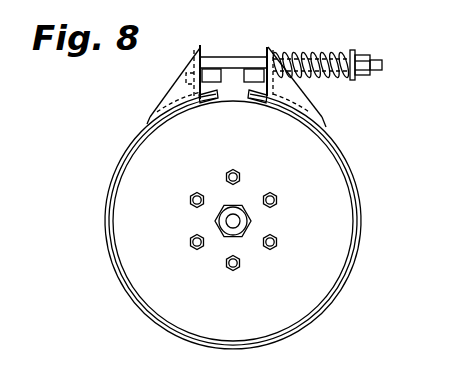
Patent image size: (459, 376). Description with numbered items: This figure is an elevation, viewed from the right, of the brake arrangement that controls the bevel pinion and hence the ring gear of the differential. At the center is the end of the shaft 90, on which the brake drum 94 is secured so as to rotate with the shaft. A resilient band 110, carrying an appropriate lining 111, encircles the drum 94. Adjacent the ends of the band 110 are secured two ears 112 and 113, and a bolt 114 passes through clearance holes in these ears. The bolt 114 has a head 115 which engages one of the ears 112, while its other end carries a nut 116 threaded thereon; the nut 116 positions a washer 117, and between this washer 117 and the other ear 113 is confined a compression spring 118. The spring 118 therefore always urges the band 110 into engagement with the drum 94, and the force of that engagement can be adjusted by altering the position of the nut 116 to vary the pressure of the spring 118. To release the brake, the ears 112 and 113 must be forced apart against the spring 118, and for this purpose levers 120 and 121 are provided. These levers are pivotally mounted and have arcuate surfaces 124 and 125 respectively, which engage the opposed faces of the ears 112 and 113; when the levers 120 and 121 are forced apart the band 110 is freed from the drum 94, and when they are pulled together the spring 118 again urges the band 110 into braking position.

The shaft 90 is at (254, 220).
The brake drum 94 is at (288, 220).
The resilient band 110 is at (338, 150).
The lining 111 is at (319, 138).
The ear 112 is at (177, 71).
The ear 113 is at (296, 80).
The bolt 114 is at (382, 65).
The head 115 is at (185, 58).
The nut 116 is at (365, 54).
The washer 117 is at (357, 76).
The compression spring 118 is at (338, 58).
The lever 120 is at (205, 93).
The lever 121 is at (253, 98).
The arcuate surface 124 is at (208, 79).
The arcuate surface 125 is at (260, 79).